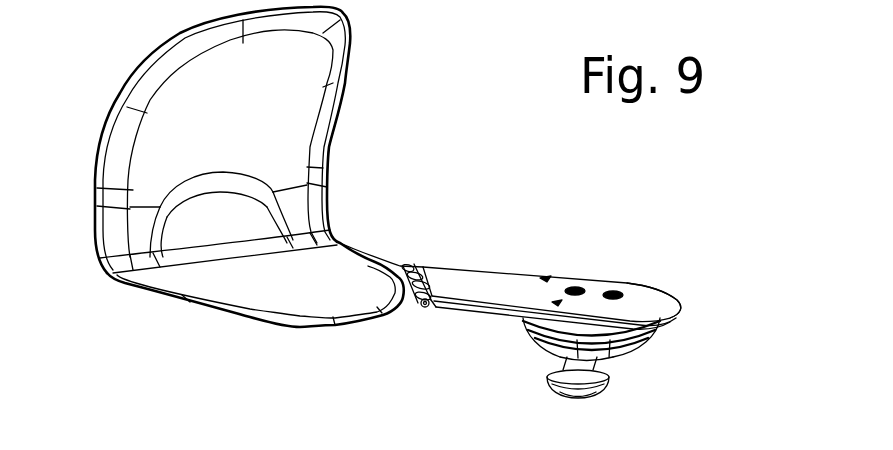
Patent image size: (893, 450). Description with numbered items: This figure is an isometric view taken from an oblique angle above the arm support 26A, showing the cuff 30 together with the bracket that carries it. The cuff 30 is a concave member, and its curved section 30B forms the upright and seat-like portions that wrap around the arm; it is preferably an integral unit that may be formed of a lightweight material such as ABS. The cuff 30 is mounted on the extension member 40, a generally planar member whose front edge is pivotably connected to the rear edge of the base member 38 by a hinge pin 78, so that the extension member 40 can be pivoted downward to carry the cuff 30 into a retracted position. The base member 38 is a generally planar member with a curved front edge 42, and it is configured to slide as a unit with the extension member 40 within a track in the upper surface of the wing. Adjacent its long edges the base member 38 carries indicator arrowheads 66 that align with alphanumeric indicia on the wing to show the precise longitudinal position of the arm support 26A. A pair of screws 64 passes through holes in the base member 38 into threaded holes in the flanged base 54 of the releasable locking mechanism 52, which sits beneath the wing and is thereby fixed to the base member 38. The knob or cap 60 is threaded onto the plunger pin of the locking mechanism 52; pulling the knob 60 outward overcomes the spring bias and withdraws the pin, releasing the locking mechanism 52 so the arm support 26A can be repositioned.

The cuff 30 is at (350, 47).
The curved section 30B is at (183, 131).
The arm support 26A is at (333, 147).
The extension member 40 is at (390, 268).
The hinge pin 78 is at (423, 305).
The base member 38 is at (485, 313).
The curved front edge 42 is at (680, 312).
The arrowheads 66 is at (556, 301).
The screws 64 is at (615, 292).
The flanged base 54 is at (623, 350).
The knob or cap 60 is at (597, 390).
The releasable locking mechanism 52 is at (582, 397).